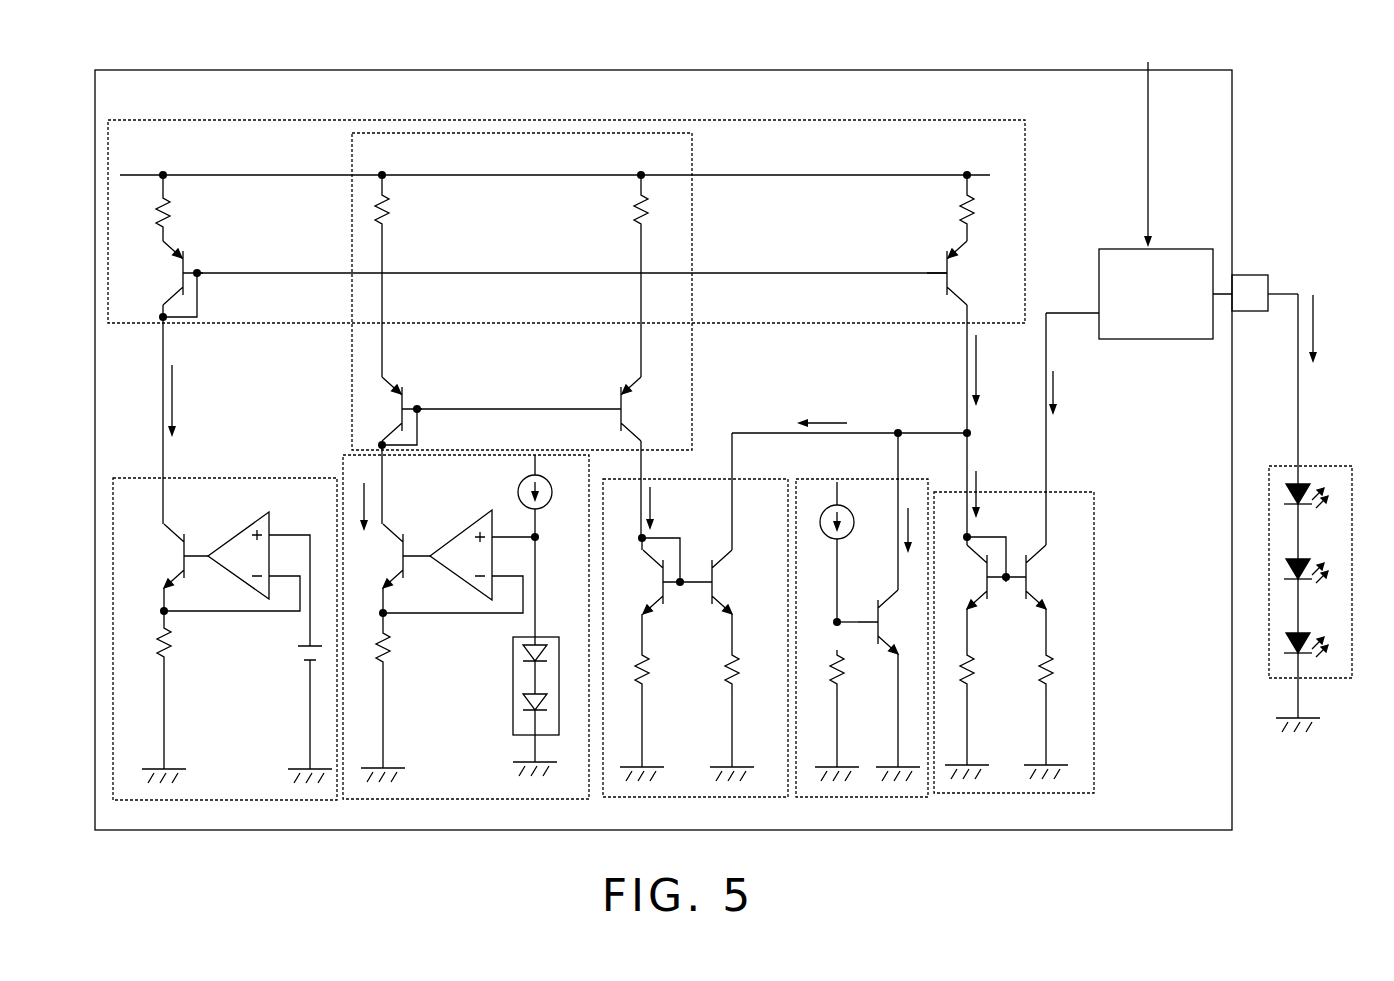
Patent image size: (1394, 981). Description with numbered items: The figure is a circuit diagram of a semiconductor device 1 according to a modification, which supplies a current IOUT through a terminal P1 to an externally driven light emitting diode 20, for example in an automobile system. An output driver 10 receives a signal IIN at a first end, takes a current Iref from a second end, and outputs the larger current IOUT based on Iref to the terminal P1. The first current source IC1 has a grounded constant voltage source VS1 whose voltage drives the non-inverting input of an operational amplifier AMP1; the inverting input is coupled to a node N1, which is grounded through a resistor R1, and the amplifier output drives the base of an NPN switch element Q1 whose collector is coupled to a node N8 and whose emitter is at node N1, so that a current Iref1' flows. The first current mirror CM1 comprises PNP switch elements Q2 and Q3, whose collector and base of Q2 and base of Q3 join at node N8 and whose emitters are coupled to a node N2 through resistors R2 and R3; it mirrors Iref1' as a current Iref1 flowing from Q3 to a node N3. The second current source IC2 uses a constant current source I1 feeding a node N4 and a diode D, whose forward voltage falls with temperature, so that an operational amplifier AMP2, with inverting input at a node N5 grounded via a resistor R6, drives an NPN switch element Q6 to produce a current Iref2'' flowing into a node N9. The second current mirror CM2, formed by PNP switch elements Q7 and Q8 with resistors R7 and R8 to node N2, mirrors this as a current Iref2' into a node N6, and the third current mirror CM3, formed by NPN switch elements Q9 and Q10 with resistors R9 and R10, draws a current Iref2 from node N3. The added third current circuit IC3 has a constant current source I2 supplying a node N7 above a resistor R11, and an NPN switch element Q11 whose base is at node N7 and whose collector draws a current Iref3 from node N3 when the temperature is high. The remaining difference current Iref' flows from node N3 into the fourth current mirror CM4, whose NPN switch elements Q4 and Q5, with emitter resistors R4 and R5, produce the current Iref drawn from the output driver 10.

The semiconductor device 1 is at (1232, 97).
The output driver 10 is at (1184, 249).
The externally driven light emitting diode 20 is at (1330, 466).
The terminal P1 is at (1266, 275).
The signal IIN is at (1149, 141).
The current IOUT is at (1343, 328).
The first current mirror CM1 is at (128, 121).
The second current mirror CM2 is at (352, 362).
The third current mirror CM3 is at (745, 479).
The fourth current mirror CM4 is at (1094, 650).
The first current source IC1 is at (115, 477).
The second current source IC2 is at (345, 455).
The third current circuit IC3 is at (836, 479).
The operational amplifier AMP1 is at (257, 526).
The operational amplifier AMP2 is at (470, 522).
The constant voltage source VS1 is at (298, 646).
The diode D is at (559, 667).
The constant current source I1 is at (551, 492).
The constant current source I2 is at (852, 523).
The switch element Q1 is at (192, 570).
The switch element Q2 is at (188, 263).
The switch element Q3 is at (946, 290).
The switch element Q4 is at (985, 605).
The switch element Q5 is at (1027, 603).
The switch element Q6 is at (410, 572).
The switch element Q7 is at (406, 393).
The switch element Q8 is at (616, 392).
The switch element Q9 is at (661, 606).
The switch element Q10 is at (712, 606).
The switch element Q11 is at (880, 640).
The resistor R1 is at (161, 645).
The resistor R2 is at (161, 216).
The resistor R3 is at (960, 205).
The resistor R4 is at (975, 689).
The resistor R5 is at (1050, 667).
The resistor R6 is at (380, 646).
The resistor R7 is at (389, 206).
The resistor R8 is at (634, 205).
The resistor R9 is at (650, 689).
The resistor R10 is at (737, 689).
The resistor R11 is at (842, 689).
The node N1 is at (160, 611).
The node N2 is at (165, 172).
The node N3 is at (972, 433).
The node N4 is at (541, 538).
The node N5 is at (379, 612).
The node N6 is at (639, 535).
The node N7 is at (835, 619).
The node N8 is at (159, 318).
The node N9 is at (379, 442).
The current Iref is at (1092, 393).
The current Iref' is at (998, 482).
The current Iref1 is at (1003, 370).
The current Iref1' is at (208, 401).
The current Iref2 is at (823, 407).
The current Iref2' is at (682, 508).
The current Iref2'' is at (314, 488).
The current Iref3 is at (905, 540).